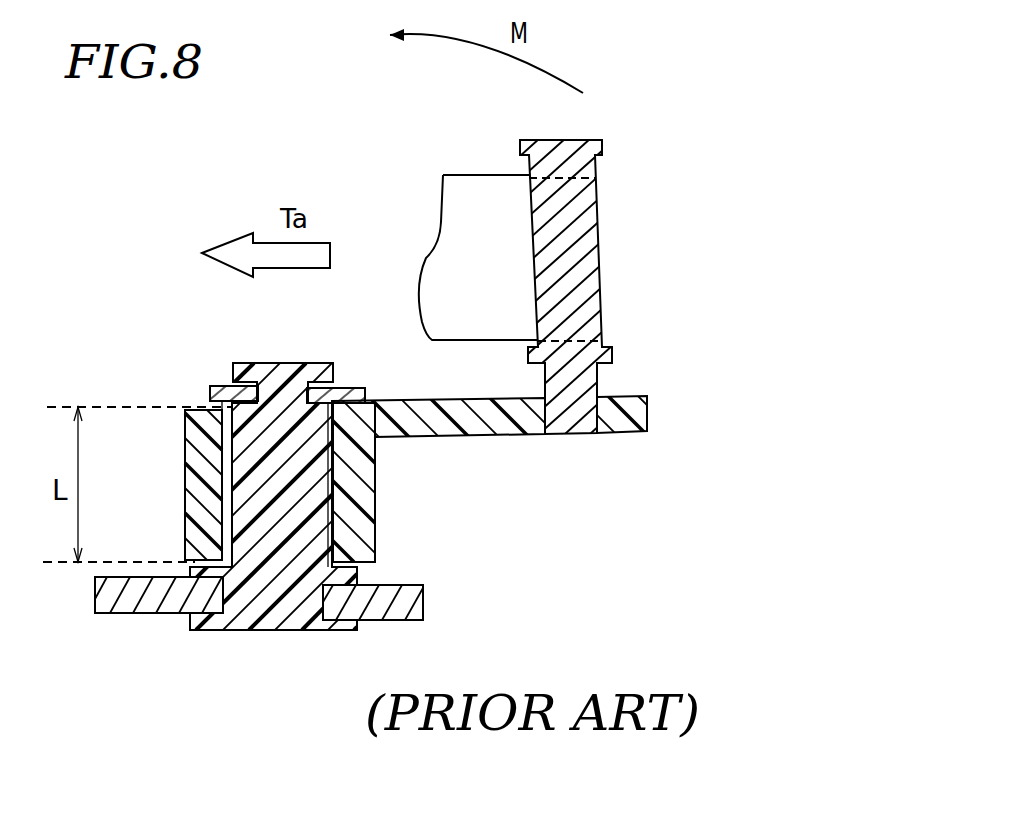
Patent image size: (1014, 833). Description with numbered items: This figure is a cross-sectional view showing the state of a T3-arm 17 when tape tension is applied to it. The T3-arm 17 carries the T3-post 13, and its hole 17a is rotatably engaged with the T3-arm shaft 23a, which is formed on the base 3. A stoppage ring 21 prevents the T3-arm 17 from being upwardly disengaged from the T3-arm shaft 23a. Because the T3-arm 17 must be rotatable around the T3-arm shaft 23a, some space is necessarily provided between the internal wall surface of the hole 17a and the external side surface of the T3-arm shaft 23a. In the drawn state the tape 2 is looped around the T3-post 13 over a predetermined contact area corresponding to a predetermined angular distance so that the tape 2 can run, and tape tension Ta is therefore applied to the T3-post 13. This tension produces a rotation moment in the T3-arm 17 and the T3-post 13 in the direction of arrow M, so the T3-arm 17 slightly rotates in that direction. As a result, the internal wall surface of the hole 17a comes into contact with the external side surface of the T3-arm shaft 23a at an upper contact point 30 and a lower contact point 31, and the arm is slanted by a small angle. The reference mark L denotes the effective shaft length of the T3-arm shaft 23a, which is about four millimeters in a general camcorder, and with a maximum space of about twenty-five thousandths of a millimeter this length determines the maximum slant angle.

The tape 2 is at (481, 198).
The T3-post 13 is at (600, 288).
The T3-arm 17 is at (472, 428).
The hole 17a is at (367, 534).
The upper contact point 30 is at (380, 404).
The stoppage ring 21 is at (220, 386).
The T3-arm shaft 23a is at (252, 462).
The lower contact point 31 is at (193, 548).
The base 3 is at (392, 605).